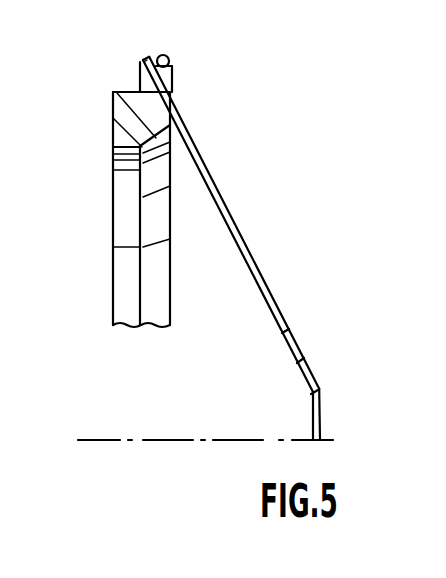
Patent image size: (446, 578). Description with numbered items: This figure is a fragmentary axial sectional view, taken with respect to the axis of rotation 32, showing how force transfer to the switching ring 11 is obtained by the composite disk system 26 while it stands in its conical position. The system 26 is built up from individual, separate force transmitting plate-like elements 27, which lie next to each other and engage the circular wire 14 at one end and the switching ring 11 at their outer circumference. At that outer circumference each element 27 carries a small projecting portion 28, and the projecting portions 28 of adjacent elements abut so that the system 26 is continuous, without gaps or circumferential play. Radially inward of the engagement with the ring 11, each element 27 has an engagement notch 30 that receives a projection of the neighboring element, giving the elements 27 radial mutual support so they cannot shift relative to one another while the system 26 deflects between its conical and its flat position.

The switching ring 11 is at (135, 120).
The circular wire 14 is at (169, 54).
The composite disk system 26 is at (210, 232).
The force transmitting plate-like element 27 is at (238, 232).
The projecting portion 28 is at (142, 62).
The engagement notch 30 is at (296, 343).
The axis of rotation 32 is at (105, 441).